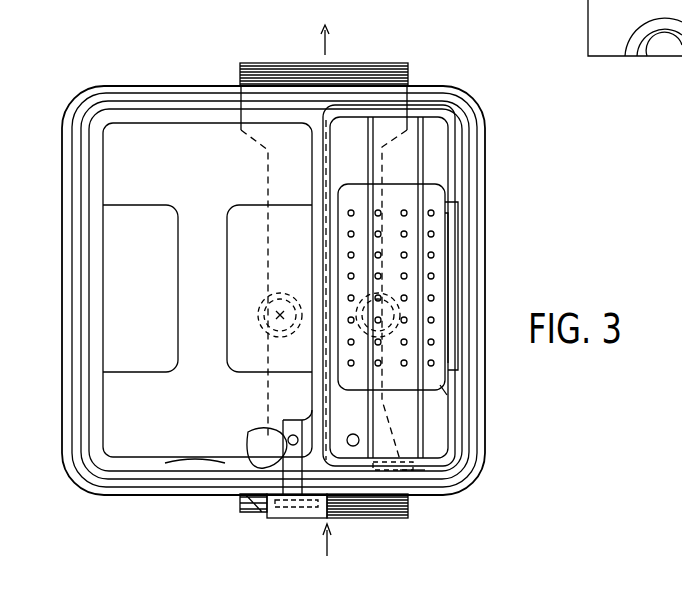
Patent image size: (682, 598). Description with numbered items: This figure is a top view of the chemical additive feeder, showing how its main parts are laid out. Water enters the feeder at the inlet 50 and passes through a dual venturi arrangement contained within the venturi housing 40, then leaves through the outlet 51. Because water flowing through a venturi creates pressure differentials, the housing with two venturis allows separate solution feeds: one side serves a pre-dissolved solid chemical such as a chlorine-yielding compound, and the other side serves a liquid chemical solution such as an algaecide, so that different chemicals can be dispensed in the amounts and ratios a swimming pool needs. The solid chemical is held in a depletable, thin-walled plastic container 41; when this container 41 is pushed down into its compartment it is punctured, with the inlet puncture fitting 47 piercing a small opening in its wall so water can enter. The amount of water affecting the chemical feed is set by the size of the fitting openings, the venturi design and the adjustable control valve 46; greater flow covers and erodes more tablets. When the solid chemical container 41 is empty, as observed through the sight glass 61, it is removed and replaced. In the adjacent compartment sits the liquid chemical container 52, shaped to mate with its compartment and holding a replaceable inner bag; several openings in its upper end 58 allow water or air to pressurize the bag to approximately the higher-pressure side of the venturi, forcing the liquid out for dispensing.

The venturi housing 40 is at (272, 266).
The container 41 is at (98, 476).
The control valve 46 is at (290, 522).
The inlet puncture fitting 47 is at (272, 432).
The inlet 50 is at (368, 519).
The outlet 51 is at (378, 62).
The container 52 is at (446, 393).
The upper end 58 is at (434, 236).
The sight glass 61 is at (218, 482).